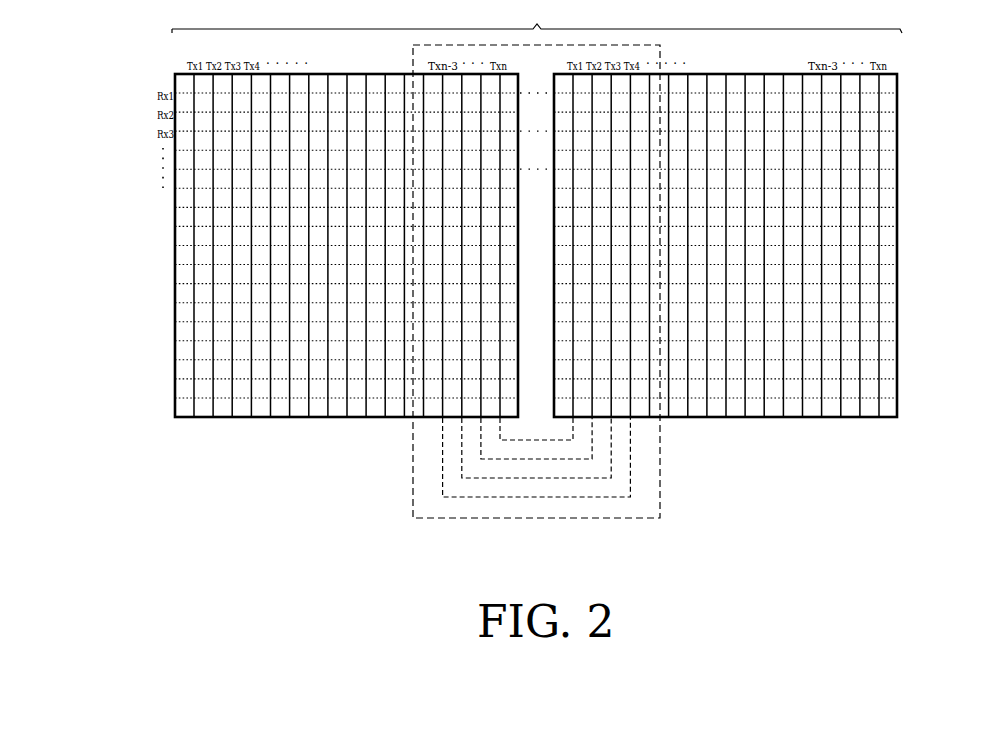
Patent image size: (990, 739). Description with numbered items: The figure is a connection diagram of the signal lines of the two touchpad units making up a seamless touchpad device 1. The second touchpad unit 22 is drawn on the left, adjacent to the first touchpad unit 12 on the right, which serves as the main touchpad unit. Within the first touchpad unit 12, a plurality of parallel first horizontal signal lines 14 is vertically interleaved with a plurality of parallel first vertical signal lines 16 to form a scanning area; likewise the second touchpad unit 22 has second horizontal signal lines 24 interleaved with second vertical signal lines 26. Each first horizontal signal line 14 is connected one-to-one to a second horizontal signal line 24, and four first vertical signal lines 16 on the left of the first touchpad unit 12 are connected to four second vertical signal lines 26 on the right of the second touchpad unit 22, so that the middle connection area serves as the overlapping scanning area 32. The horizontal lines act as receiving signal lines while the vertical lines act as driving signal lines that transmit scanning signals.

The seamless touchpad device 1 is at (537, 18).
The first touchpad unit 12 is at (897, 238).
The first horizontal signal lines 14 is at (886, 303).
The first vertical signal lines 16 is at (880, 352).
The second touchpad unit 22 is at (175, 237).
The second horizontal signal lines 24 is at (188, 304).
The second vertical signal lines 26 is at (192, 350).
The overlapping scanning area 32 is at (627, 522).